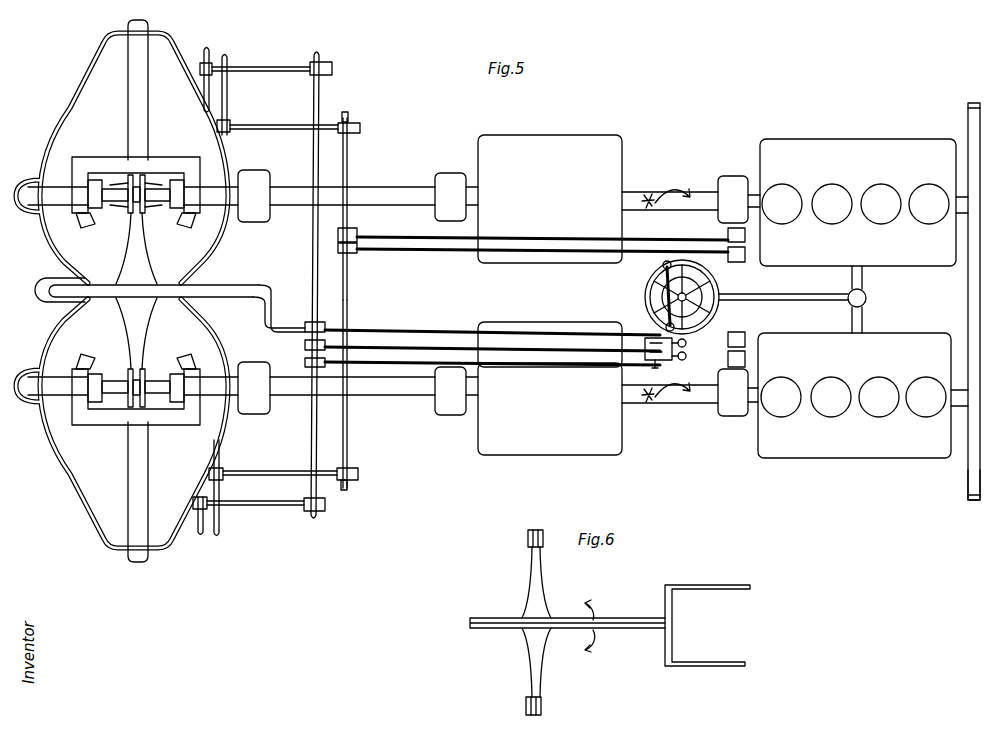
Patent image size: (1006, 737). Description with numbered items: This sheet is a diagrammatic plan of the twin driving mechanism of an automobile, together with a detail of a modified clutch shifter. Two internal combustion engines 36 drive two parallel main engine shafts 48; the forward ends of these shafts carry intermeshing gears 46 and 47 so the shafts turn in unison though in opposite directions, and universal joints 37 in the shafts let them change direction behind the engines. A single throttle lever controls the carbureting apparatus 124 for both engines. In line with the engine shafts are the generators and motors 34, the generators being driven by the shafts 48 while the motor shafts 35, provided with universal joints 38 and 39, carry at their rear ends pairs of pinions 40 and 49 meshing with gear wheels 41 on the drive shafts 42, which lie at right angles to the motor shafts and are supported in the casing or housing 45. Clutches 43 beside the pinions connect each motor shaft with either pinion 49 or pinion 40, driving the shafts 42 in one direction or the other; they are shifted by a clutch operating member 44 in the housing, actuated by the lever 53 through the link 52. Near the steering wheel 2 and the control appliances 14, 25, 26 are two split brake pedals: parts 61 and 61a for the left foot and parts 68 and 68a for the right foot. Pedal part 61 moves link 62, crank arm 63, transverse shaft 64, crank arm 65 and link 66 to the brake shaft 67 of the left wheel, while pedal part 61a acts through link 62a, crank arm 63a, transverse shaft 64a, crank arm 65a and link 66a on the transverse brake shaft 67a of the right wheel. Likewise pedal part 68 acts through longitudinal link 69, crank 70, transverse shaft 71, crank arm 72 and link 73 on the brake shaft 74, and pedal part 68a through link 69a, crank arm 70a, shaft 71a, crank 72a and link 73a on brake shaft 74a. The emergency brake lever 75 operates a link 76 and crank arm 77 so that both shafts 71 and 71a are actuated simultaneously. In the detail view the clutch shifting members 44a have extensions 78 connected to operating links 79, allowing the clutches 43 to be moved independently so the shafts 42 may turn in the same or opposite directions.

In FIG. 5, the steering wheel 2 is at (716, 290).
In FIG. 5, the steering control unit 14 is at (660, 296).
In FIG. 5, the control lever 25 is at (648, 312).
In FIG. 5, the connecting shaft 26 is at (783, 309).
In FIG. 5, the generators and motors 34 is at (546, 130).
In FIG. 5, the motor shafts 35 is at (403, 187).
In FIG. 5, the internal combustion engines 36 is at (845, 139).
In FIG. 5, the universal joints 37 is at (736, 176).
In FIG. 5, the universal joint 38 is at (452, 173).
In FIG. 5, the universal joint 39 is at (256, 171).
In FIG. 5, the pinion 40 is at (196, 216).
In FIG. 5, the gear wheels 41 is at (158, 158).
In FIG. 5, the drive shafts 42 is at (128, 107).
In FIG. 5, the clutches 43 is at (130, 214).
In FIG. 6, the clutches 43 is at (527, 539).
In FIG. 5, the clutch operating member 44 is at (148, 272).
In FIG. 6, the clutch shifting members 44a is at (513, 622).
In FIG. 5, the casing or housing 45 is at (220, 267).
In FIG. 6, the casing or housing 45 is at (582, 637).
In FIG. 5, the intermeshing gear 46 is at (968, 127).
In FIG. 5, the intermeshing gear 47 is at (968, 483).
In FIG. 5, the main engine shafts 48 is at (666, 297).
In FIG. 5, the pinion 49 is at (76, 214).
In FIG. 5, the link 52 is at (276, 326).
In FIG. 5, the lever 53 is at (688, 340).
In FIG. 5, the pedal part 61 is at (727, 233).
In FIG. 5, the pedal part 61a is at (744, 260).
In FIG. 5, the link 62 is at (643, 237).
In FIG. 5, the link 62a is at (637, 253).
In FIG. 5, the crank arm 63 is at (357, 232).
In FIG. 5, the crank arm 63a is at (357, 248).
In FIG. 5, the transverse shaft 64 is at (348, 172).
In FIG. 5, the transverse shaft 64a is at (349, 292).
In FIG. 5, the crank arm 65 is at (352, 126).
In FIG. 5, the crank arm 65a is at (358, 476).
In FIG. 5, the link 66 is at (262, 126).
In FIG. 5, the link 66a is at (269, 471).
In FIG. 5, the brake shaft 67 is at (227, 99).
In FIG. 5, the transverse brake shaft 67a is at (221, 496).
In FIG. 5, the pedal part 68 is at (746, 334).
In FIG. 5, the pedal part 68a is at (746, 358).
In FIG. 5, the longitudinal link 69 is at (416, 328).
In FIG. 5, the link 69a is at (413, 366).
In FIG. 5, the crank 70 is at (320, 322).
In FIG. 5, the crank arm 70a is at (304, 362).
In FIG. 5, the transverse shaft 71 is at (313, 260).
In FIG. 5, the transverse shaft 71a is at (312, 427).
In FIG. 5, the crank arm 72 is at (326, 66).
In FIG. 5, the crank 72a is at (325, 504).
In FIG. 5, the link 73 is at (266, 67).
In FIG. 5, the link 73a is at (277, 505).
In FIG. 5, the brake shaft 74 is at (202, 70).
In FIG. 5, the brake shaft 74a is at (200, 532).
In FIG. 5, the emergency brake lever 75 is at (688, 356).
In FIG. 5, the link 76 is at (577, 345).
In FIG. 5, the crank arm 77 is at (304, 346).
In FIG. 6, the extensions 78 is at (613, 618).
In FIG. 6, the operating links 79 is at (705, 662).
In FIG. 5, the carbureting apparatus 124 is at (866, 298).